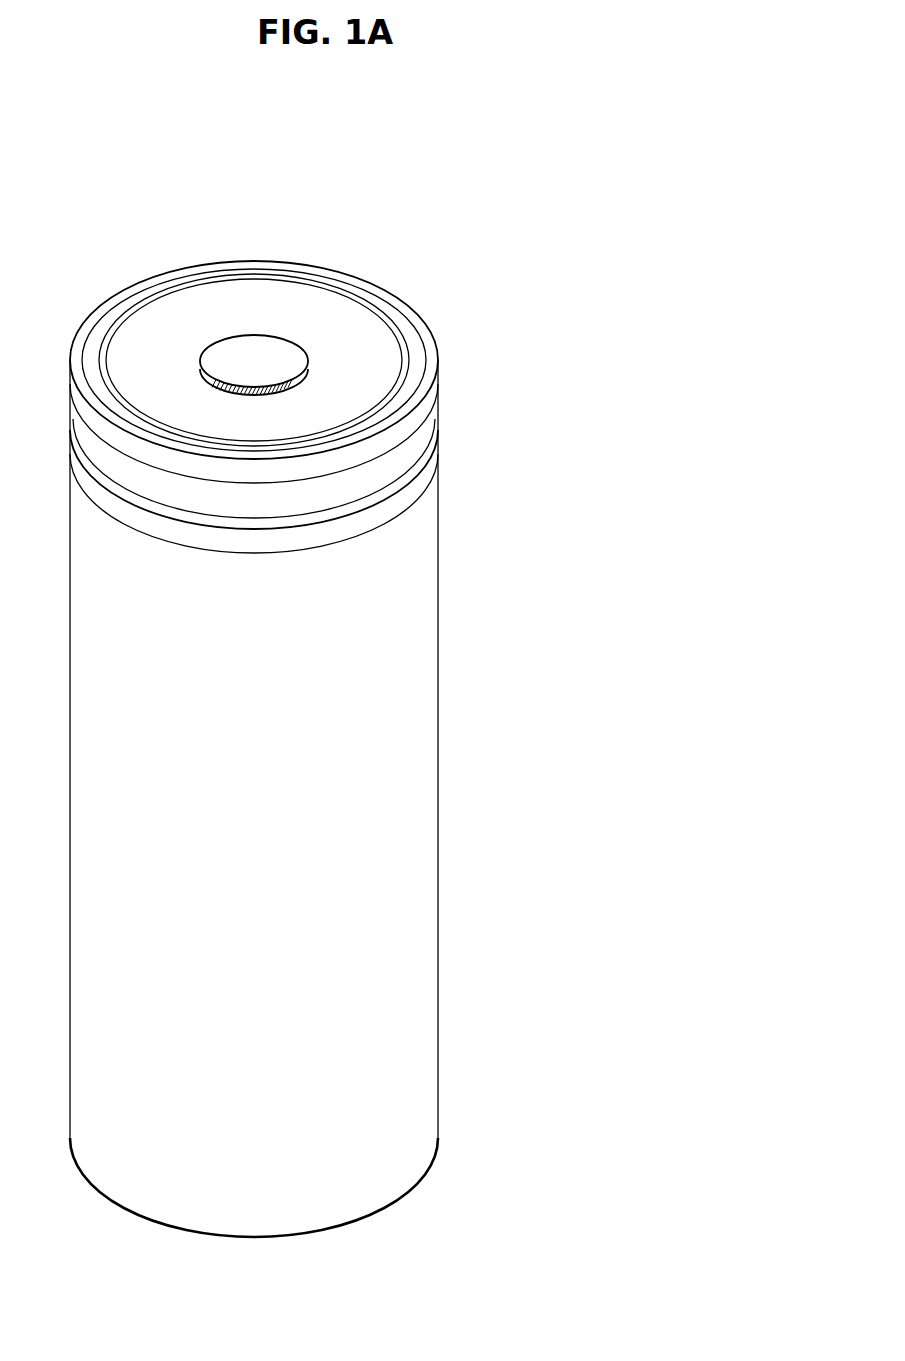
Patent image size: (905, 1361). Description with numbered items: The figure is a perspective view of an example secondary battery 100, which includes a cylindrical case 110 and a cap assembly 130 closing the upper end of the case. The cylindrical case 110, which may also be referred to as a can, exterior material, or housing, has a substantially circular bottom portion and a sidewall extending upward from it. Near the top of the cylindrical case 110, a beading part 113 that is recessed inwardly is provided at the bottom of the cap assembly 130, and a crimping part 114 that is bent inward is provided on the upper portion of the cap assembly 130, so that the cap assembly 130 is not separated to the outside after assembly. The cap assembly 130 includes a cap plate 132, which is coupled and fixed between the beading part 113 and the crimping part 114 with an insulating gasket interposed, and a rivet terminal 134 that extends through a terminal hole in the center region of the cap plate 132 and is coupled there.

The secondary battery 100 is at (533, 215).
The cylindrical case 110 is at (438, 840).
The beading part 113 is at (440, 437).
The crimping part 114 is at (417, 357).
The cap assembly 130 is at (258, 303).
The cap plate 132 is at (348, 332).
The rivet terminal 134 is at (232, 352).